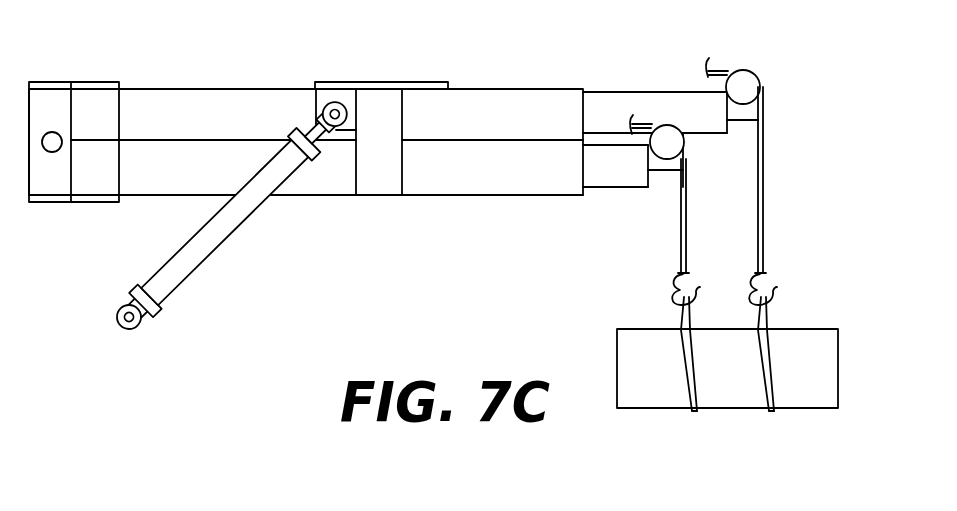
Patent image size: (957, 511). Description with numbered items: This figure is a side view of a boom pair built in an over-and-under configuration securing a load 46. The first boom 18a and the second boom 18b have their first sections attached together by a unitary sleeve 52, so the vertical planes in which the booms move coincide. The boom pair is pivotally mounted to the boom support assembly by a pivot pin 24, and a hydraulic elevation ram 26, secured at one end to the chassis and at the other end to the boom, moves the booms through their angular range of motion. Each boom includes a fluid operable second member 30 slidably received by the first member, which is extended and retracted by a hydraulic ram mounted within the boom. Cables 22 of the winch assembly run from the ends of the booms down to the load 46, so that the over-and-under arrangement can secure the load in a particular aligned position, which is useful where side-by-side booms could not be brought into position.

The first boom 18a is at (545, 78).
The second boom 18b is at (435, 220).
The cables 22 is at (755, 166).
The pivot pin 24 is at (53, 152).
The hydraulic elevation ram 26 is at (223, 237).
The second member 30 is at (652, 91).
The load 46 is at (797, 329).
The unitary sleeve 52 is at (527, 179).